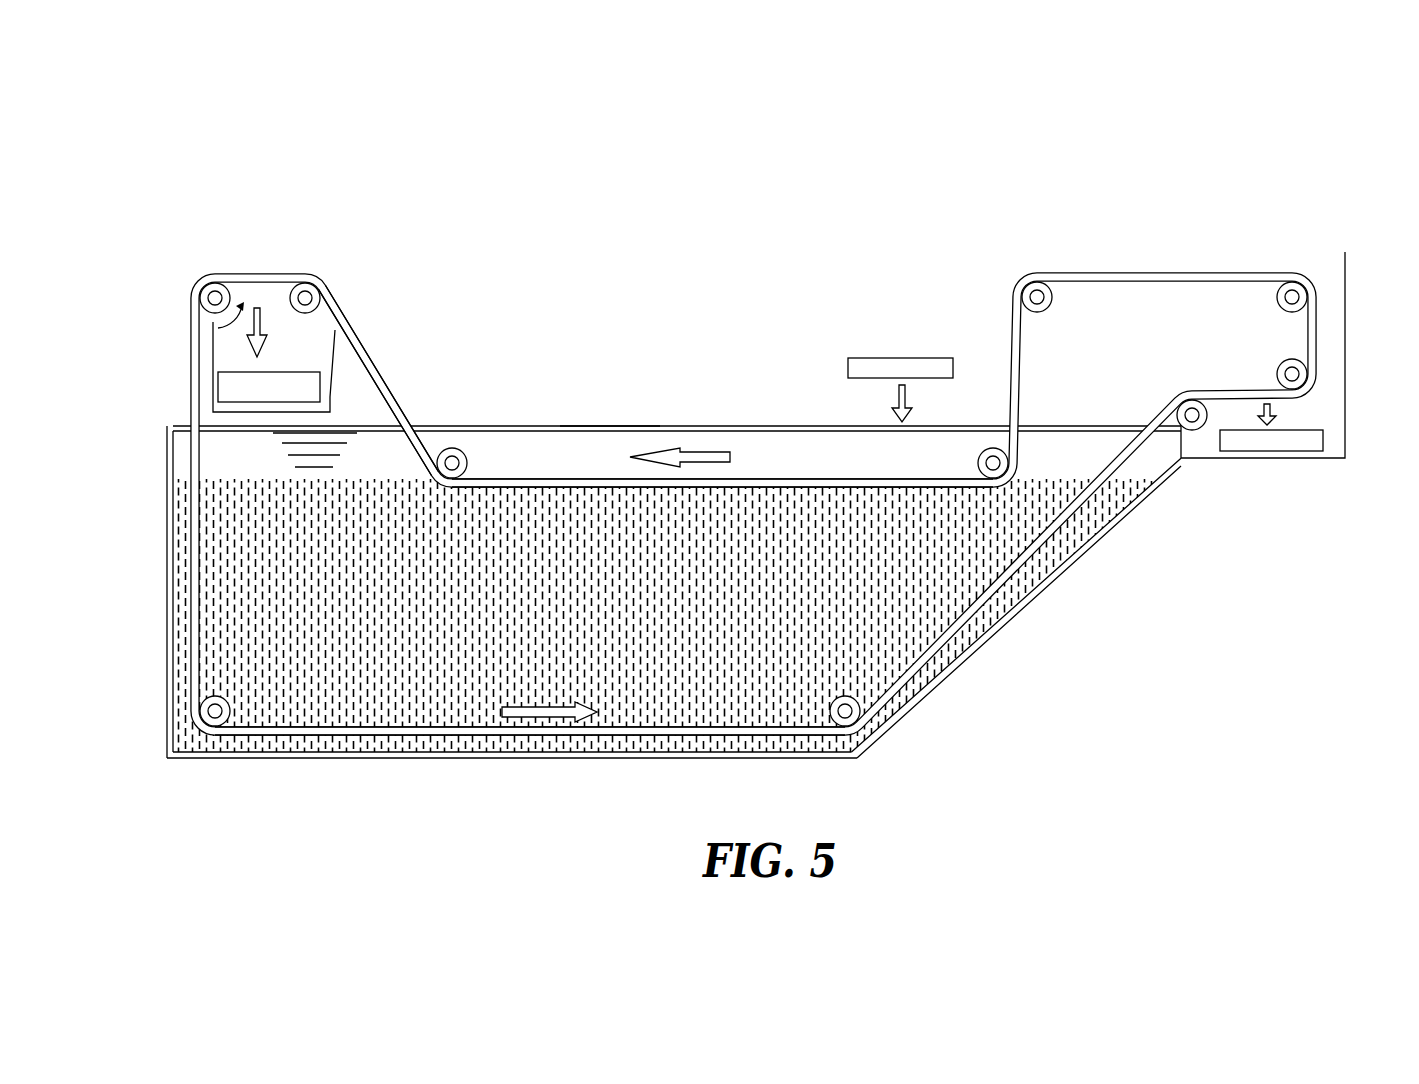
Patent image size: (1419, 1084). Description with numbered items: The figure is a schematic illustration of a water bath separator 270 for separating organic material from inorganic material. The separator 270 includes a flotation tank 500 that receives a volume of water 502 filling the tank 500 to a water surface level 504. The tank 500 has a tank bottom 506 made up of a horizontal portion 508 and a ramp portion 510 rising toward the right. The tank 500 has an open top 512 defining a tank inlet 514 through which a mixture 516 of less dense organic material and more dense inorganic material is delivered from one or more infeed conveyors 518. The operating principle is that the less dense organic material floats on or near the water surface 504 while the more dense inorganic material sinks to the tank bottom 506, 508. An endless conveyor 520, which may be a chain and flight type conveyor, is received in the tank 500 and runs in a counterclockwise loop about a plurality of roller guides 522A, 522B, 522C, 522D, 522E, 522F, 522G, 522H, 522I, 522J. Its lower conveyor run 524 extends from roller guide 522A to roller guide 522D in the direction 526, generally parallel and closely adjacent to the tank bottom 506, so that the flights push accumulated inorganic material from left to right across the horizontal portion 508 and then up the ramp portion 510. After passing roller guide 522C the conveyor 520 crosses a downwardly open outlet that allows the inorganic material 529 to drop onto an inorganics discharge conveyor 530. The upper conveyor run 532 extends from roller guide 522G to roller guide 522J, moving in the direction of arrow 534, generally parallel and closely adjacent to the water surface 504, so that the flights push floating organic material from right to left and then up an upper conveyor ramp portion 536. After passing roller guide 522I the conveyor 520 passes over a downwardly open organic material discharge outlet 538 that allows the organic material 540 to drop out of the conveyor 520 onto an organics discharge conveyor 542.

The organic/inorganic separator 270 is at (1180, 180).
The flotation tank 500 is at (716, 538).
The volume of water 502 is at (908, 597).
The water surface level 504 is at (363, 483).
The tank bottom 506 is at (674, 641).
The horizontal portion 508 is at (758, 760).
The ramp portion 510 is at (952, 655).
The open top 512 is at (590, 426).
The tank inlet 514 is at (605, 452).
The mixture 516 is at (896, 396).
The infeed conveyor 518 is at (873, 357).
The endless conveyor 520 is at (753, 509).
The roller guide 522A is at (216, 724).
The roller guide 522B is at (850, 717).
The roller guide 522C is at (1194, 427).
The roller guide 522D is at (1285, 360).
The roller guide 522E is at (1290, 283).
The roller guide 522F is at (1032, 284).
The roller guide 522G is at (990, 449).
The roller guide 522H is at (452, 449).
The roller guide 522I is at (320, 282).
The roller guide 522J is at (208, 280).
The lower conveyor run 524 is at (718, 736).
The direction of lower conveyor run 526 is at (537, 714).
The inorganic material 529 is at (1276, 412).
The inorganics discharge conveyor 530 is at (1310, 442).
The upper conveyor run 532 is at (745, 487).
The arrow 534 is at (718, 452).
The upper conveyor ramp portion 536 is at (342, 313).
The organic material discharge outlet 538 is at (213, 322).
The organic material 540 is at (257, 300).
The organics discharge conveyor 542 is at (228, 387).